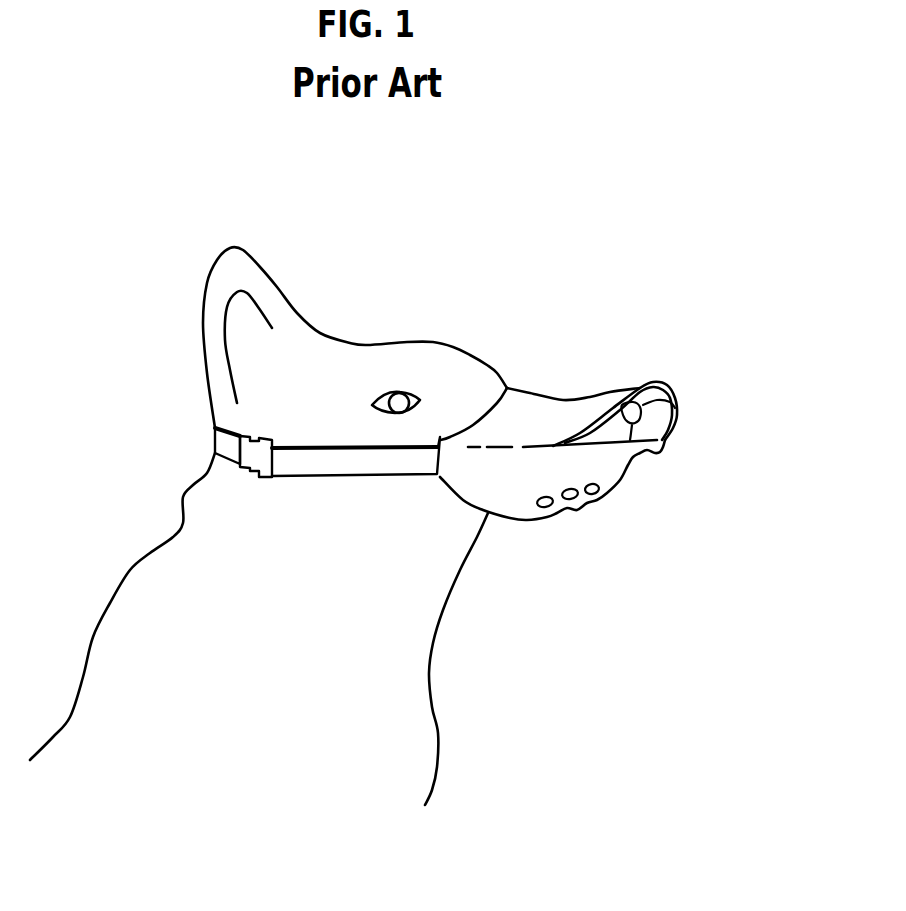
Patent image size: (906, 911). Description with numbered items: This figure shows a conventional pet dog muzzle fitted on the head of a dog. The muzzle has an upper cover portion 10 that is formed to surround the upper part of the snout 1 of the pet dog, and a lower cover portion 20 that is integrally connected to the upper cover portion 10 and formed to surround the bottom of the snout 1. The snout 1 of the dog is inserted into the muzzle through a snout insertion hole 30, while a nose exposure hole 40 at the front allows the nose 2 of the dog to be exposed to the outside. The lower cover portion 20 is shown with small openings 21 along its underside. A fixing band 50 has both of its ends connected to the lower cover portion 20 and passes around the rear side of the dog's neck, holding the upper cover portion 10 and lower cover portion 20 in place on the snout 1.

The snout 1 is at (612, 428).
The nose 2 is at (668, 397).
The upper cover portion 10 is at (577, 413).
The lower cover portion 20 is at (527, 502).
The ventilation holes 21 is at (593, 490).
The snout insertion hole 30 is at (473, 419).
The nose exposure hole 40 is at (655, 427).
The fixing band 50 is at (228, 442).